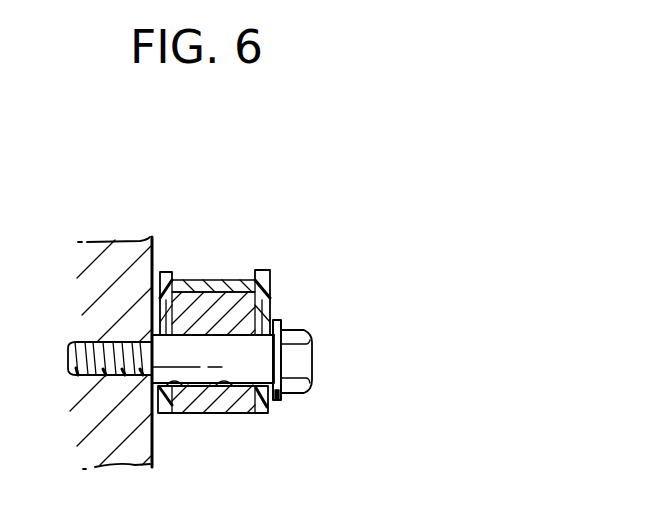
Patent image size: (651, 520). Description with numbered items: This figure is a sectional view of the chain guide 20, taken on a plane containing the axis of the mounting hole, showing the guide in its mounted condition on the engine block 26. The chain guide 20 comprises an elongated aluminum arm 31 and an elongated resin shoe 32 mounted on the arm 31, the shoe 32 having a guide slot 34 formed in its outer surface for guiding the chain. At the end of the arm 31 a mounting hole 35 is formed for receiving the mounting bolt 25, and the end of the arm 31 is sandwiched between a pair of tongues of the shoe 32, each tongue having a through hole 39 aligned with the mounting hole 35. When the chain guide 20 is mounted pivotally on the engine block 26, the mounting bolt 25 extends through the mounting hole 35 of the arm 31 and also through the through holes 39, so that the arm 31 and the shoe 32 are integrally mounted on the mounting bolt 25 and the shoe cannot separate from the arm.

The chain guide 20 is at (244, 301).
The mounting bolt 25 is at (311, 372).
The engine block 26 is at (128, 240).
The arm 31 is at (270, 299).
The shoe 32 is at (269, 271).
The guide slot 34 is at (193, 280).
The mounting hole 35 is at (216, 383).
The through hole 39 is at (170, 383).